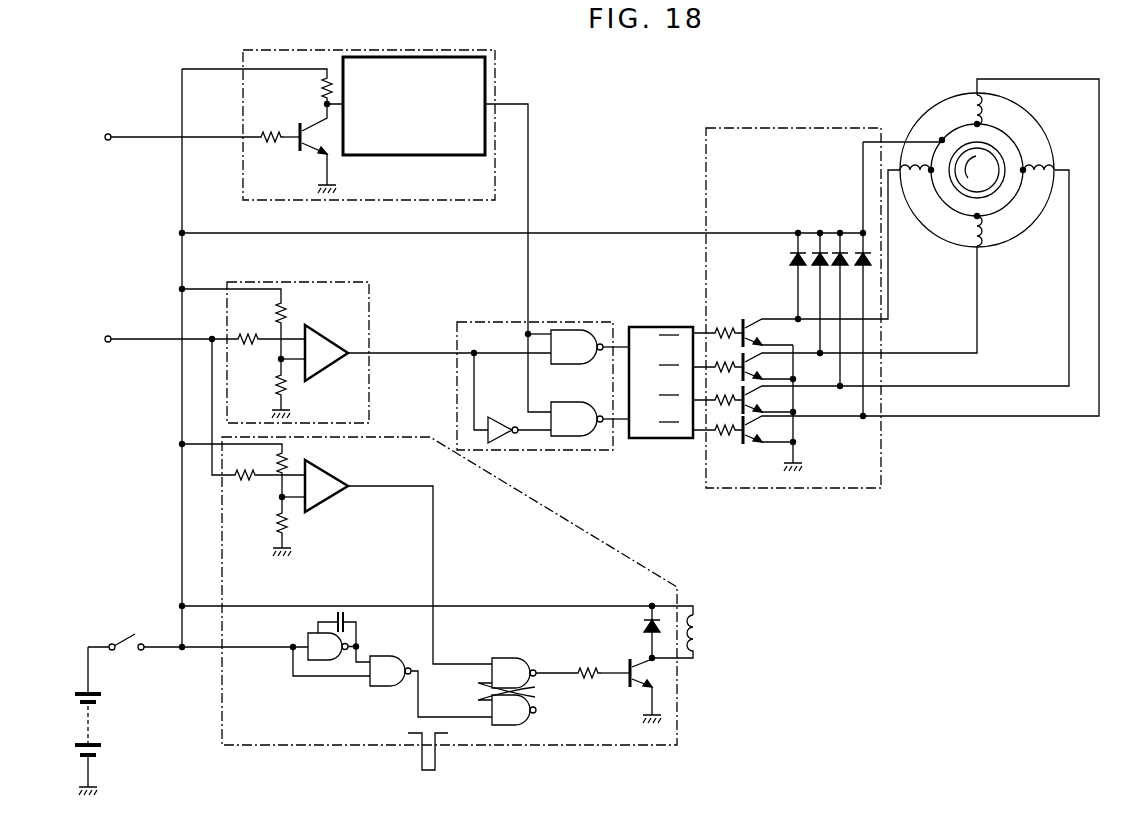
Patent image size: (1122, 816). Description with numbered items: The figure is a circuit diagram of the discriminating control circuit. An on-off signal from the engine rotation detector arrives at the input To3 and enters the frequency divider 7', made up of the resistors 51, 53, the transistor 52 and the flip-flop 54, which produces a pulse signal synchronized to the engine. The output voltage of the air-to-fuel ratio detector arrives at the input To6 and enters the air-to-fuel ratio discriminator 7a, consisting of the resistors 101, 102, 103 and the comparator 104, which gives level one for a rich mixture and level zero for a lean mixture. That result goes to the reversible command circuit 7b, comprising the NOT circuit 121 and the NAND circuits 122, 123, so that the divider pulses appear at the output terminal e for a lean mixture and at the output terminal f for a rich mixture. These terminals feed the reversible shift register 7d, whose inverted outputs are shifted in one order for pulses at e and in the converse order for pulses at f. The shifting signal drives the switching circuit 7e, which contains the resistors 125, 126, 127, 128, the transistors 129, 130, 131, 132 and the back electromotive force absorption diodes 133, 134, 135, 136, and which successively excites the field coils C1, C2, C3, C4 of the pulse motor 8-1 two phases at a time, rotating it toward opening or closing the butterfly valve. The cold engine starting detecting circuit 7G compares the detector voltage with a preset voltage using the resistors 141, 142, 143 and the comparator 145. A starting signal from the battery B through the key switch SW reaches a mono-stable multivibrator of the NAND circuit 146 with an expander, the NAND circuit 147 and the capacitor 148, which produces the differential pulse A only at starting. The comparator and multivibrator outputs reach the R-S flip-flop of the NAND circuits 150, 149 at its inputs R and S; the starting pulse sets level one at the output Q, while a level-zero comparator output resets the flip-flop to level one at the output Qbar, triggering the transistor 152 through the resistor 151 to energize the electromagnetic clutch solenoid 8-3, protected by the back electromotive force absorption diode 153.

The frequency divider 7' is at (387, 125).
The resistor 51 is at (325, 86).
The transistor 52 is at (320, 148).
The resistor 53 is at (268, 165).
The flip-flop 54 is at (418, 148).
The air-to-fuel ratio discriminator 7a is at (318, 283).
The resistor 101 is at (262, 356).
The resistor 102 is at (286, 311).
The resistor 103 is at (286, 387).
The comparator 104 is at (344, 353).
The reversible command circuit 7b is at (508, 323).
The NOT circuit 121 is at (514, 443).
The NAND circuit 122 is at (565, 330).
The NAND circuit 123 is at (573, 438).
The reversible shift register 7d is at (664, 327).
The switching circuit 7e is at (787, 128).
The resistor 125 is at (710, 326).
The resistor 126 is at (722, 376).
The resistor 127 is at (725, 410).
The resistor 128 is at (726, 440).
The transistor 129 is at (750, 331).
The transistor 130 is at (790, 362).
The transistor 131 is at (776, 406).
The transistor 132 is at (776, 436).
The back electromotive force absorption diode 133 is at (792, 262).
The back electromotive force absorption diode 134 is at (816, 262).
The back electromotive force absorption diode 135 is at (838, 260).
The back electromotive force absorption diode 136 is at (860, 260).
The pulse motor 8-1 is at (936, 110).
The field coil C1 is at (899, 165).
The field coil C2 is at (991, 240).
The field coil C3 is at (1046, 184).
The field coil C4 is at (986, 102).
The resistor 141 is at (255, 491).
The resistor 142 is at (298, 451).
The resistor 143 is at (290, 528).
The comparator 145 is at (334, 485).
The cold engine starting detecting circuit 7G is at (631, 551).
The NAND circuit 146 is at (317, 663).
The NAND circuit 147 is at (380, 689).
The capacitor 148 is at (345, 611).
The NAND circuit 149 is at (512, 727).
The NAND circuit 150 is at (510, 657).
The resistor 151 is at (598, 684).
The transistor 152 is at (650, 675).
The back electromotive force absorption diode 153 is at (661, 615).
The electromagnetic clutch solenoid 8-3 is at (701, 631).
The key switch SW is at (128, 634).
The battery B is at (98, 728).
The reset input R is at (463, 649).
The set input S is at (459, 706).
The Q output terminal Q is at (553, 716).
The inverted Q output terminal Qbar is at (555, 646).
The output terminal e is at (620, 339).
The output terminal f is at (630, 435).
The differential pulse A is at (428, 768).
The connection to engine rotation detector To3 is at (148, 138).
The connection to air-to-fuel ratio detector To6 is at (137, 340).